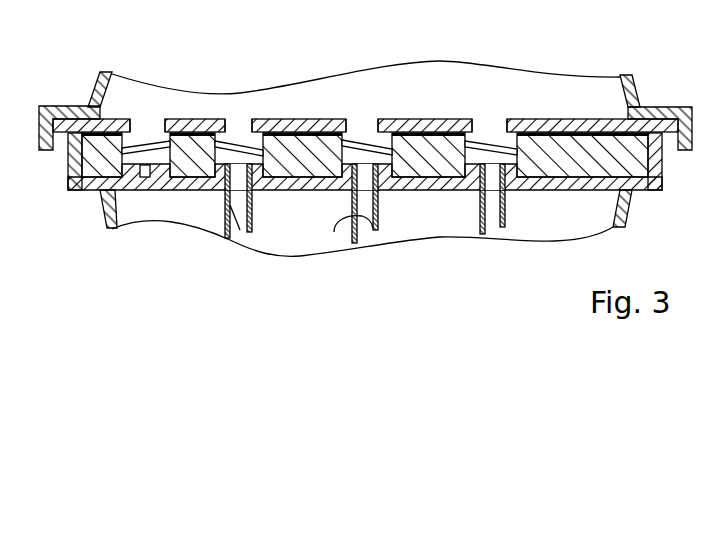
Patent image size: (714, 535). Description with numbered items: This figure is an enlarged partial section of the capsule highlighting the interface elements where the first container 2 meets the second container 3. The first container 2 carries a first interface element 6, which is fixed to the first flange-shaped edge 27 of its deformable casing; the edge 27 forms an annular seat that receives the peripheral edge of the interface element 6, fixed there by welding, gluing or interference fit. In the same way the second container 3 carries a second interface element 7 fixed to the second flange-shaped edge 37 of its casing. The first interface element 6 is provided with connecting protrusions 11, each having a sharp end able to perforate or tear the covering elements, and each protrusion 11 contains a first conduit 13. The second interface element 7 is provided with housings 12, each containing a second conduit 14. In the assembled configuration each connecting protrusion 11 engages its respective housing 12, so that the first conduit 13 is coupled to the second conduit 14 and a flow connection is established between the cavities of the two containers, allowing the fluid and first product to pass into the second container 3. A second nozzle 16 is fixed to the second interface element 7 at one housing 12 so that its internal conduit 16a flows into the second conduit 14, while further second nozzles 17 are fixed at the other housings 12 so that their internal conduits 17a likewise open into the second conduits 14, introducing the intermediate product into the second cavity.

The first container 2 is at (70, 85).
The second container 3 is at (660, 206).
The first interface element 6 is at (540, 127).
The second interface element 7 is at (575, 162).
The connecting protrusion 11 is at (144, 140).
The housing 12 is at (170, 152).
The first conduit 13 is at (362, 134).
The second conduit 14 is at (146, 167).
The second nozzle 16 is at (376, 231).
The internal conduit 16a is at (334, 232).
The further second nozzle 17 is at (234, 238).
The internal conduit 17a is at (230, 205).
The first flange-shaped edge 27 is at (42, 128).
The second flange-shaped edge 37 is at (693, 119).